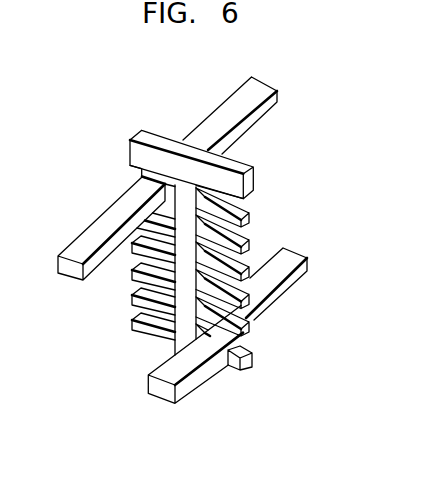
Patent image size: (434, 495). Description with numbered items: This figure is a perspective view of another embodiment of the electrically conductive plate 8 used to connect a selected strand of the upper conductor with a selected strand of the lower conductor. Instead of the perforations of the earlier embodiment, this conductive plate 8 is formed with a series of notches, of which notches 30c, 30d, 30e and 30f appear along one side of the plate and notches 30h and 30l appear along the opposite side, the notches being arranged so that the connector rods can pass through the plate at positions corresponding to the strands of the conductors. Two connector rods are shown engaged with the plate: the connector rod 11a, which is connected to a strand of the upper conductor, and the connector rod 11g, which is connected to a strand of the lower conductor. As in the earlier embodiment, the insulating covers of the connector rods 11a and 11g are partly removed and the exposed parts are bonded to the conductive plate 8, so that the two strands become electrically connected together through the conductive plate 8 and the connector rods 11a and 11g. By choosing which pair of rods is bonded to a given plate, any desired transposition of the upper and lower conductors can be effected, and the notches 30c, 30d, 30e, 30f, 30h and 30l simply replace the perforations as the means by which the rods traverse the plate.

The connector rod 11a is at (93, 235).
The connector rod 11g is at (189, 377).
The notch 30c is at (153, 235).
The notch 30d is at (153, 263).
The notch 30e is at (151, 287).
The notch 30f is at (144, 314).
The notch 30h is at (240, 317).
The notch 30l is at (237, 206).
The conductive plate 8 is at (231, 367).